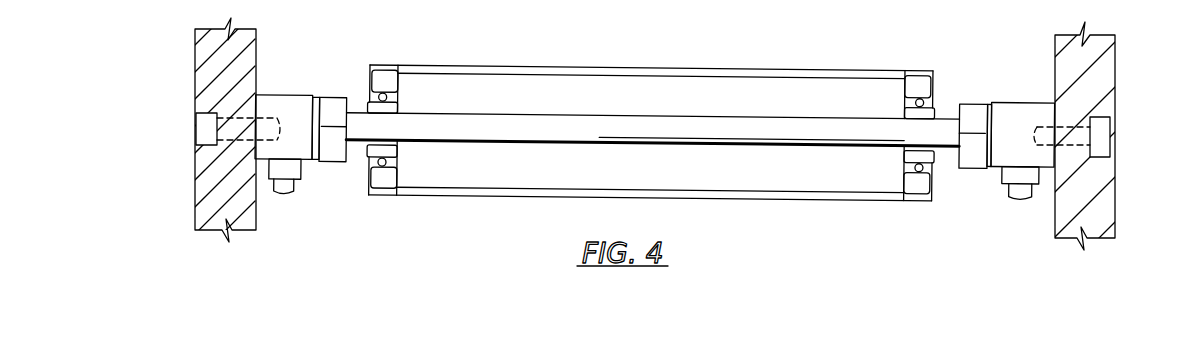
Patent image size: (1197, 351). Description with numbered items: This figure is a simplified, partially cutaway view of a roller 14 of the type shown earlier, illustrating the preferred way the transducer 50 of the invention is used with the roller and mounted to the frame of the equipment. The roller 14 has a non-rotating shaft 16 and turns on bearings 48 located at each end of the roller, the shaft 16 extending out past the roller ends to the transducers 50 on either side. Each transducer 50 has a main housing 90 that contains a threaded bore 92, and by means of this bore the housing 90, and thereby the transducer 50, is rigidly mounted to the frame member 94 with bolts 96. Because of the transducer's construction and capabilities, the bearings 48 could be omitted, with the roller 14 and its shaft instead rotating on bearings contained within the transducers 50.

The roller 14 is at (588, 67).
The shaft 16 is at (833, 140).
The bearings 48 is at (367, 102).
The transducer 50 is at (323, 63).
The main housing 90 is at (283, 95).
The threaded bore 92 is at (277, 137).
The frame member 94 is at (203, 53).
The bolts 96 is at (208, 127).